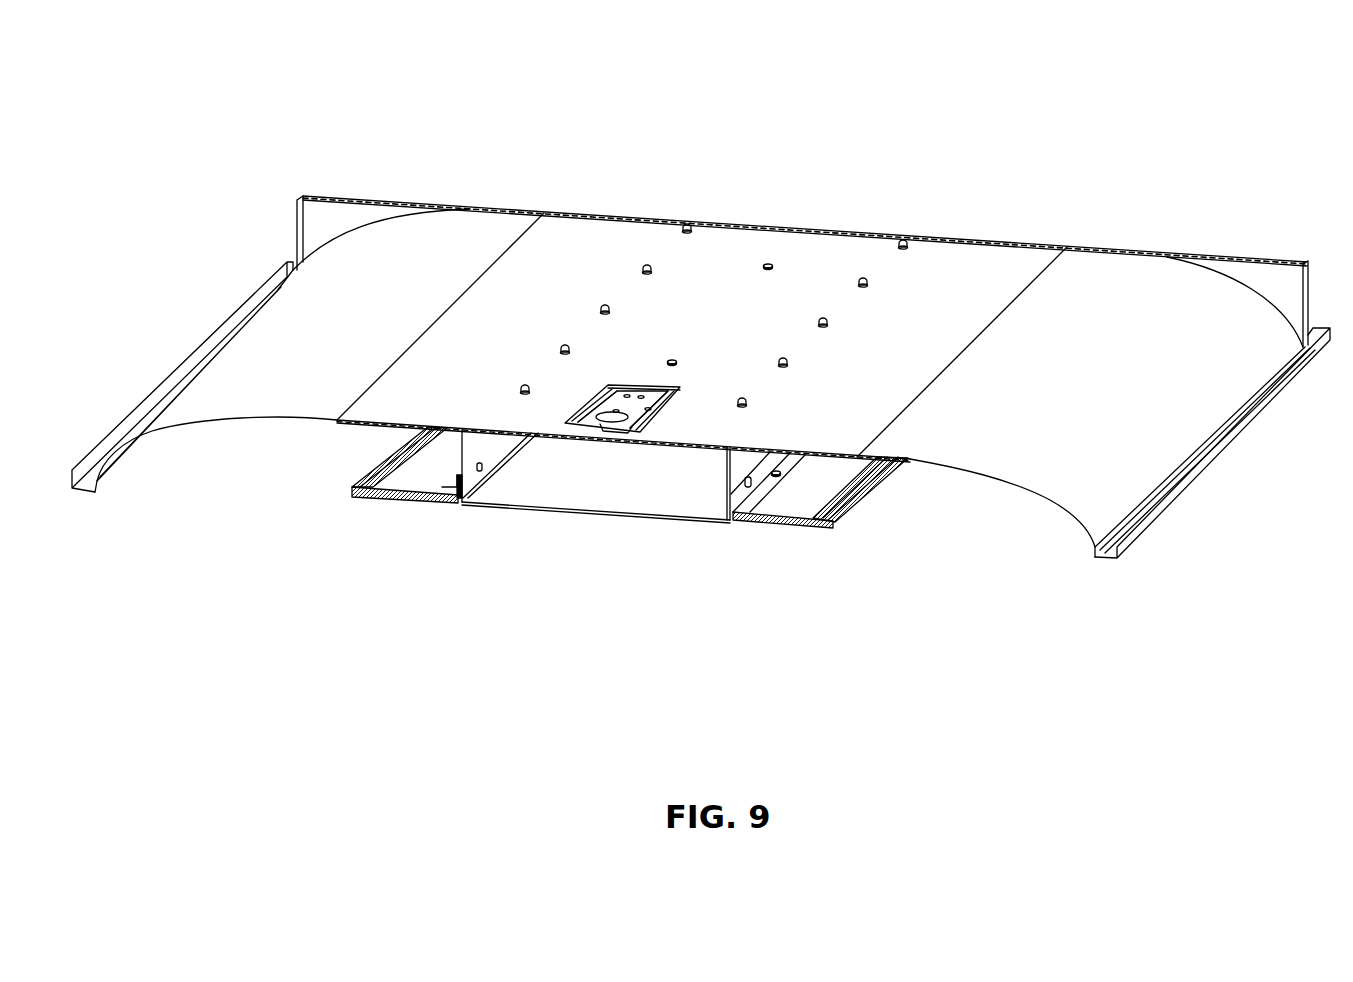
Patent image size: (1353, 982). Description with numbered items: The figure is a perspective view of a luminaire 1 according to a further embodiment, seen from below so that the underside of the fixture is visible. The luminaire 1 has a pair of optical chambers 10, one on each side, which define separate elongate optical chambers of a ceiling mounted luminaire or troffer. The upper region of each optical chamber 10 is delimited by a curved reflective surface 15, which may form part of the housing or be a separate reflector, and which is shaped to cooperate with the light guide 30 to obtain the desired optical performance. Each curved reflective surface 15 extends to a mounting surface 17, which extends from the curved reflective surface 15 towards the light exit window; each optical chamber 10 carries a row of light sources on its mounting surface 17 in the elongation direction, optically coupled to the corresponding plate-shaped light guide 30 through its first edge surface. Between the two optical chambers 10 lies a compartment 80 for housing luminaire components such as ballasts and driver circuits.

The luminaire 1 is at (722, 741).
The optical chamber 10 is at (270, 442).
The curved reflective surface 15 is at (430, 247).
The mounting surface 17 is at (737, 477).
The light guide 30 is at (413, 492).
The compartment 80 is at (587, 472).